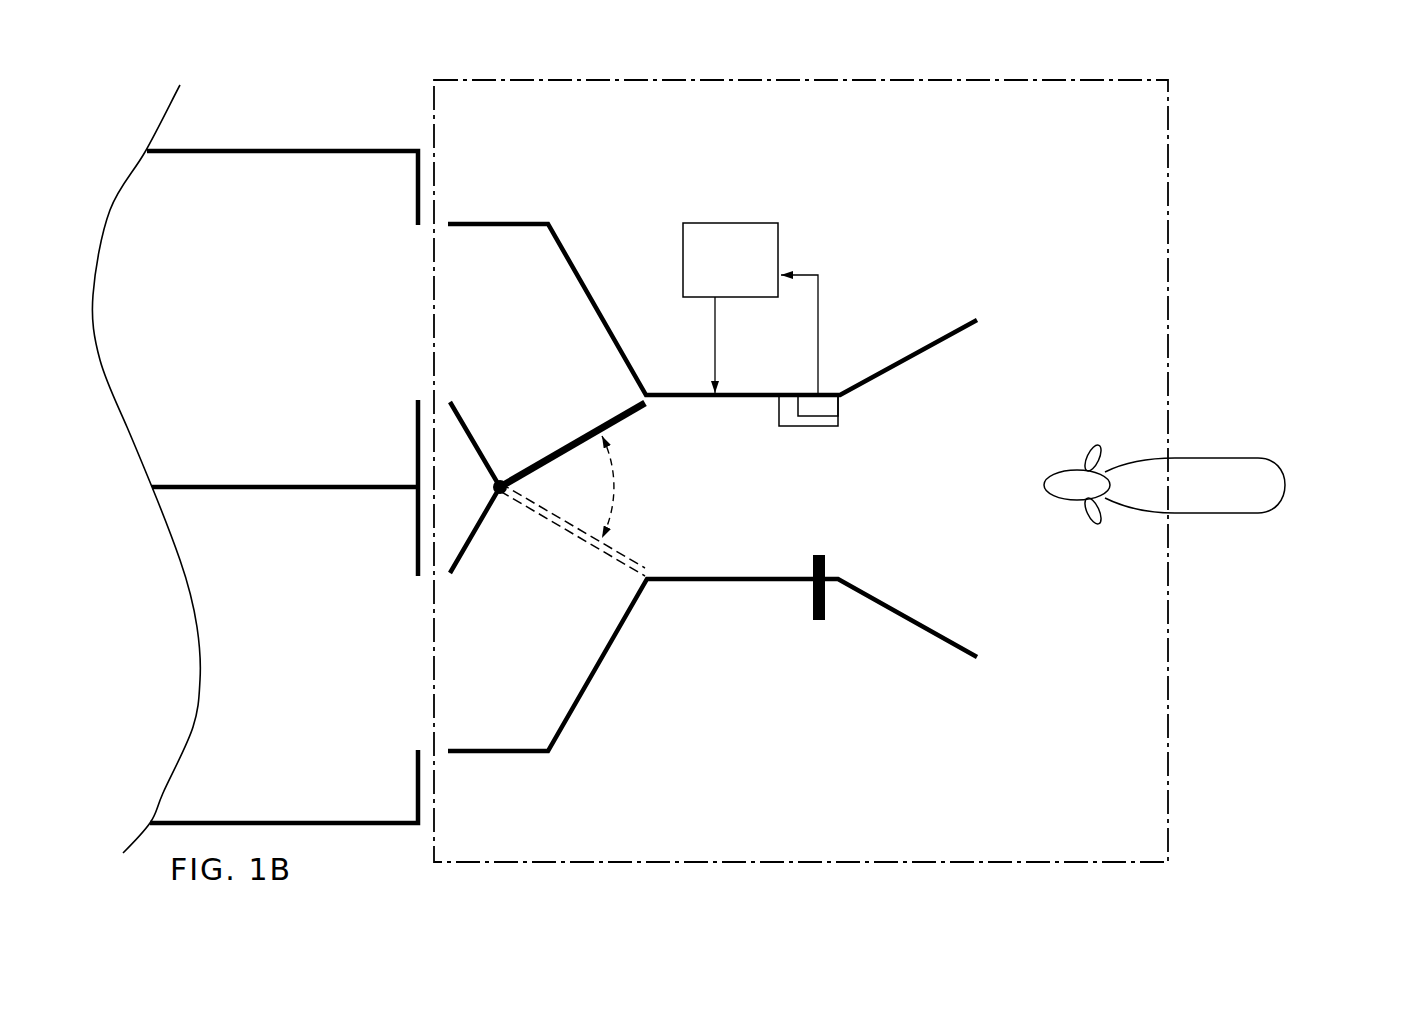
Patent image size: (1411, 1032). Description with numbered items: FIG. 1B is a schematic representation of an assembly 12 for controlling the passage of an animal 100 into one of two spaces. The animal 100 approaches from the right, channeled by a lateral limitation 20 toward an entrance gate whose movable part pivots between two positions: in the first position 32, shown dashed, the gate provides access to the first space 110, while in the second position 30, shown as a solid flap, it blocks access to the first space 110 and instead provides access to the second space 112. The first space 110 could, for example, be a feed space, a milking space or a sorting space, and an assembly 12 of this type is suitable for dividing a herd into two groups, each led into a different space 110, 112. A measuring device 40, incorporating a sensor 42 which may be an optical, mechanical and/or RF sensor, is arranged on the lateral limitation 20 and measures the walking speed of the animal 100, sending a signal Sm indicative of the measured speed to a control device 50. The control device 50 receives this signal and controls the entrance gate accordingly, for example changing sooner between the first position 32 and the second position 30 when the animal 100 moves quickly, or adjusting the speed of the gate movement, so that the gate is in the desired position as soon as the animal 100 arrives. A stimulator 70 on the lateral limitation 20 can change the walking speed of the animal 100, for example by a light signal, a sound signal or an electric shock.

The assembly 12 is at (1168, 164).
The lateral limitation 20 is at (944, 314).
The second position 30 is at (622, 410).
The first position 32 is at (623, 557).
The measuring device 40 is at (808, 418).
The sensor 42 is at (817, 407).
The control device 50 is at (727, 237).
The stimulator 70 is at (813, 622).
The animal 100 is at (1236, 457).
The first space 110 is at (266, 167).
The second space 112 is at (343, 805).